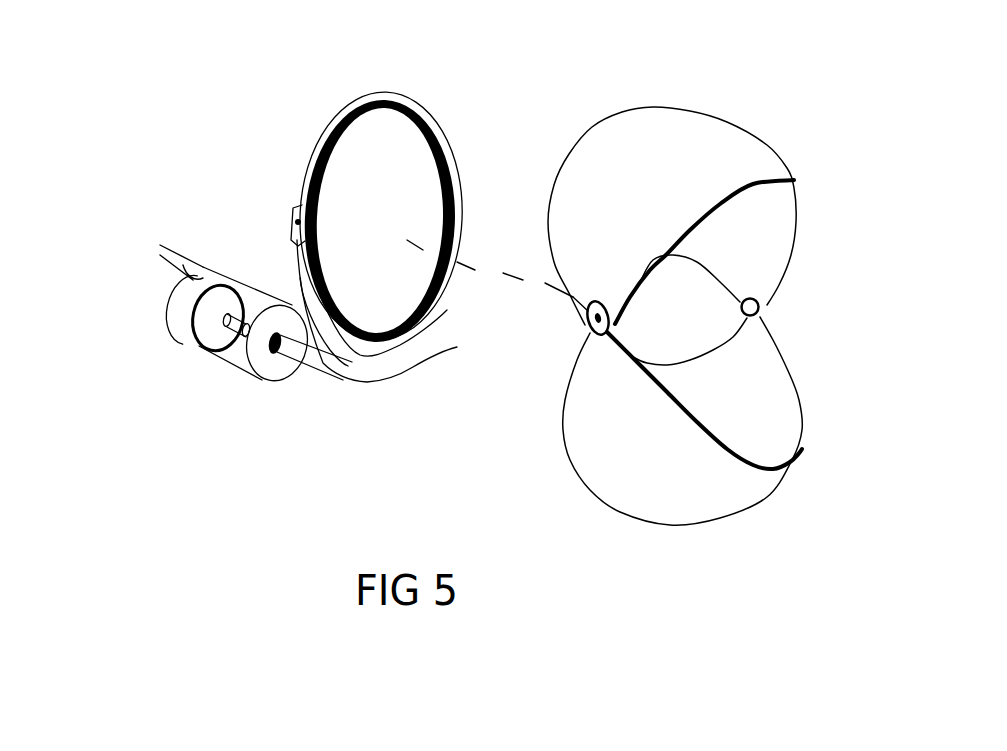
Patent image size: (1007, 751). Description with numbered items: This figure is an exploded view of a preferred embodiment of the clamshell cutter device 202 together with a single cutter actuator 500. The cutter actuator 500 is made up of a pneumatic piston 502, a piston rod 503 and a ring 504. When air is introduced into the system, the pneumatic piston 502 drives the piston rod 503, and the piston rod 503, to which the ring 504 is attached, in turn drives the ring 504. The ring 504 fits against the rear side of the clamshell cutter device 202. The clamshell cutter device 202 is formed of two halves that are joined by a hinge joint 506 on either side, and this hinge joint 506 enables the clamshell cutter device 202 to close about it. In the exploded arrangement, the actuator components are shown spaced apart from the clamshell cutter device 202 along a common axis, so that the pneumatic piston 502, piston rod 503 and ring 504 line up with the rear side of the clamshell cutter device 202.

The cutter actuator 500 is at (178, 148).
The pneumatic piston 502 is at (237, 332).
The piston rod 503 is at (312, 368).
The ring 504 is at (412, 98).
The clamshell cutter device 202 is at (803, 136).
The hinge joint 506 is at (780, 307).